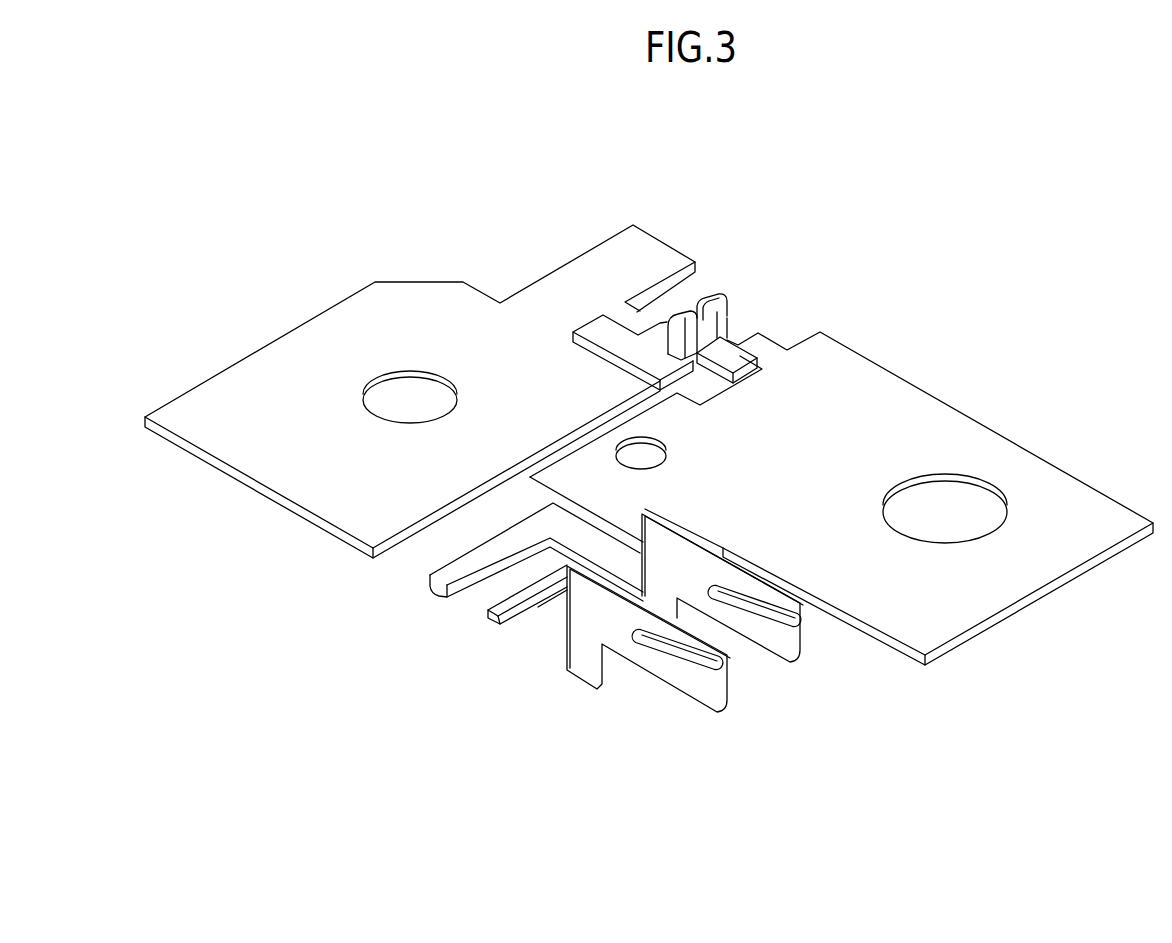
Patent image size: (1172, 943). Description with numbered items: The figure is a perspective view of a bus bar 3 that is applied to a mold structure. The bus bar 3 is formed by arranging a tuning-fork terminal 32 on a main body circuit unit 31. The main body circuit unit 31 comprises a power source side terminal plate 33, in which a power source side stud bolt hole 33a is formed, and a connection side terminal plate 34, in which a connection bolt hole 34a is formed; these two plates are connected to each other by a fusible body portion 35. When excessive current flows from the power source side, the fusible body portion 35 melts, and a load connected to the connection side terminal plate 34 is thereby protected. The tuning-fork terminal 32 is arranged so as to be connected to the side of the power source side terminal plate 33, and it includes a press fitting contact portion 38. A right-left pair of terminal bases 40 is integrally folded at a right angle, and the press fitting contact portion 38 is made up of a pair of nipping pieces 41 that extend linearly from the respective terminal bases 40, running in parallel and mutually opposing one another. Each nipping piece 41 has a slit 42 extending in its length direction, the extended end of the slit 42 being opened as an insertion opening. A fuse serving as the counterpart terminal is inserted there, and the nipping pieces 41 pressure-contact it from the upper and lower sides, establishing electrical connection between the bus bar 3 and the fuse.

The bus bar 3 is at (783, 177).
The main body circuit unit 31 is at (757, 311).
The tuning-fork terminal 32 is at (657, 658).
The power source side terminal plate 33 is at (908, 405).
The power source side stud bolt hole 33a is at (975, 494).
The connection side terminal plate 34 is at (297, 330).
The connection bolt hole 34a is at (407, 388).
The fusible body portion 35 is at (710, 307).
The press fitting contact portion 38 is at (726, 663).
The terminal bases 40 is at (587, 655).
The nipping pieces 41 is at (697, 690).
The slit 42 is at (657, 667).